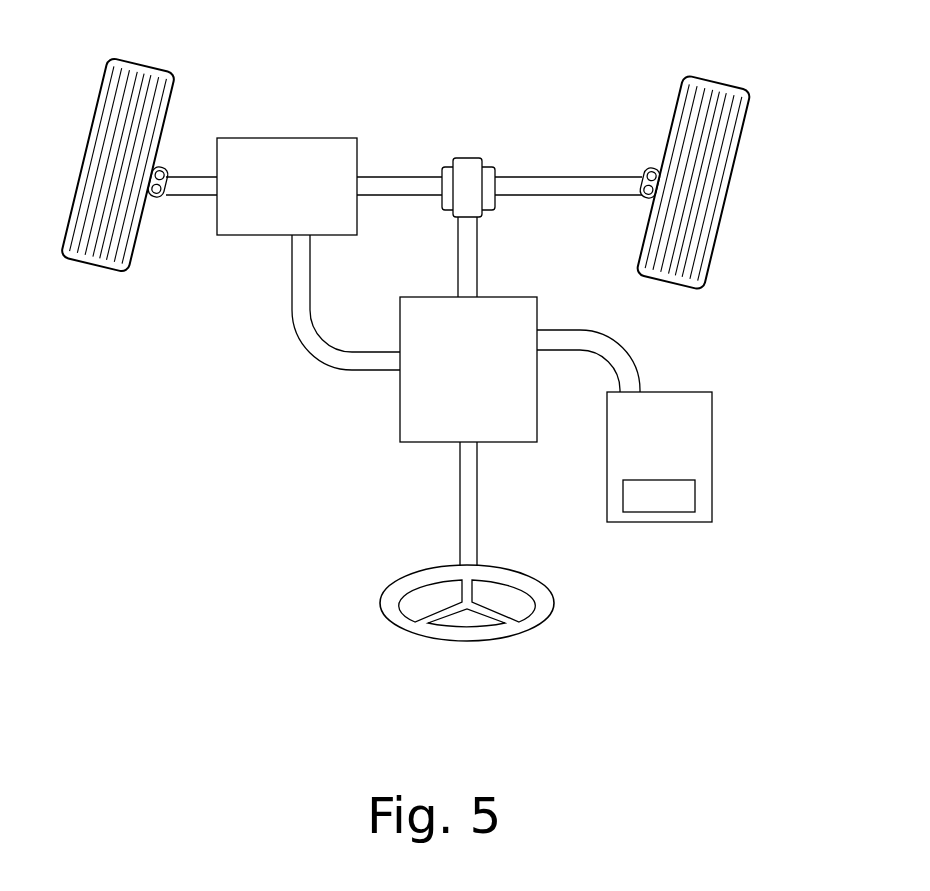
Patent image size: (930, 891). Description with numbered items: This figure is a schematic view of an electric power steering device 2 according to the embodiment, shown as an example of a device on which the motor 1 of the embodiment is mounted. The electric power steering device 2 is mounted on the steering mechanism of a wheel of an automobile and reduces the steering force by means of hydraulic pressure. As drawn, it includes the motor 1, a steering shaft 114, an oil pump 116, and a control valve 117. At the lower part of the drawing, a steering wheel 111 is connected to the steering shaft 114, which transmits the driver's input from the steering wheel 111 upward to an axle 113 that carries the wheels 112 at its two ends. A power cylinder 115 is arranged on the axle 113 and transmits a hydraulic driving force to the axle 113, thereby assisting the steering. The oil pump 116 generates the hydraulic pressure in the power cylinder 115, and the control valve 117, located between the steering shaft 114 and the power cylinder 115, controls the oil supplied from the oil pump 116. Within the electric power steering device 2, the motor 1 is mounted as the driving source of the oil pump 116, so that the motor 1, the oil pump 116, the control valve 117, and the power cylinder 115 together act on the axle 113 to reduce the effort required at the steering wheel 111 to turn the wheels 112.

The motor 1 is at (667, 497).
The electric power steering device 2 is at (403, 497).
The steering wheel 111 is at (456, 636).
The wheels 112 is at (100, 247).
The axle 113 is at (524, 188).
The steering shaft 114 is at (468, 502).
The power cylinder 115 is at (286, 158).
The oil pump 116 is at (693, 445).
The control valve 117 is at (420, 402).